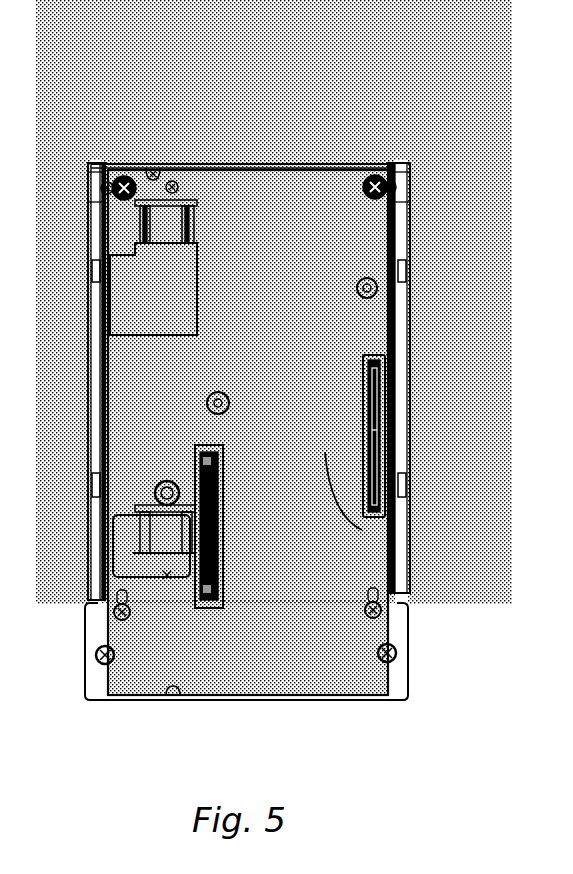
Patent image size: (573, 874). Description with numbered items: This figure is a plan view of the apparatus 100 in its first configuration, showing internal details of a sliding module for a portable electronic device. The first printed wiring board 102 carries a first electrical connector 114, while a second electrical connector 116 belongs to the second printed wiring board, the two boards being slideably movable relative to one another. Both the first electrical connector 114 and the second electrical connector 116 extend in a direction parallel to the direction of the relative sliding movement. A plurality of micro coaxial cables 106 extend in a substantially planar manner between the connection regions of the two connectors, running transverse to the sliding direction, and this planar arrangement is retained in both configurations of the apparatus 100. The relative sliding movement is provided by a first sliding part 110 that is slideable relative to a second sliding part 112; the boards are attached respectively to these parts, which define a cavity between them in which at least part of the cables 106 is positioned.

The apparatus 100 is at (380, 97).
The first printed wiring board 102 is at (153, 639).
The micro coaxial cables 106 is at (223, 558).
The first sliding part 110 is at (213, 698).
The second sliding part 112 is at (93, 677).
The first electrical connector 114 is at (225, 465).
The second electrical connector 116 is at (222, 567).